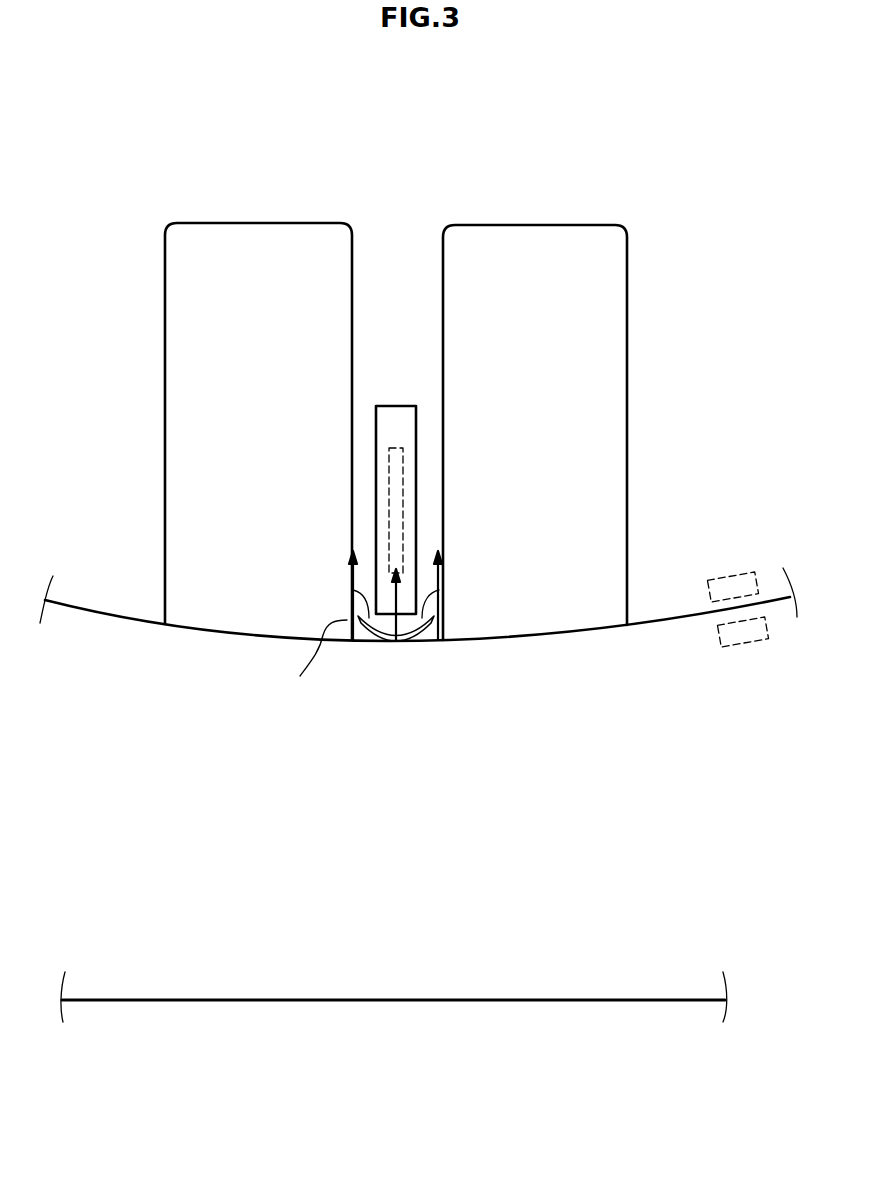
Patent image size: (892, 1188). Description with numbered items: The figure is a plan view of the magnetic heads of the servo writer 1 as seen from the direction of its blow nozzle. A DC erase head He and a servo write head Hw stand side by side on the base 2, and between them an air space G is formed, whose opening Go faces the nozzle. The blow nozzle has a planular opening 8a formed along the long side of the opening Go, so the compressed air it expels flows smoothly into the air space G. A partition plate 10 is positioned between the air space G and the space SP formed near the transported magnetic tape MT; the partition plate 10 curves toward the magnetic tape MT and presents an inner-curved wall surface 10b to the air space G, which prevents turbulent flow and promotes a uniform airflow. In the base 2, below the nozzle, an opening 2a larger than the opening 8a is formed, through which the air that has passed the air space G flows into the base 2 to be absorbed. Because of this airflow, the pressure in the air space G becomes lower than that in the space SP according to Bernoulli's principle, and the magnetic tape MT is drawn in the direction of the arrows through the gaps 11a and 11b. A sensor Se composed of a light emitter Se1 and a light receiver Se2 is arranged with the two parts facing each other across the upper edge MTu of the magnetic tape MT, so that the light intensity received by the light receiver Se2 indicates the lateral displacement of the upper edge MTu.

The servo writer 1 is at (528, 178).
The DC erase head He is at (259, 223).
The servo write head Hw is at (543, 224).
The air space G is at (394, 247).
The opening of the air space Go is at (427, 315).
The opening 2a is at (403, 441).
The planular opening 8a is at (397, 510).
The partition plate 10 is at (430, 600).
The wall surface 10b is at (348, 582).
The gap 11a is at (290, 656).
The gap 11b is at (440, 620).
The space SP is at (432, 645).
The magnetic tape MT is at (129, 621).
The upper edge MTu is at (213, 632).
The sensor Se is at (665, 676).
The light emitter Se1 is at (739, 679).
The light receiver Se2 is at (712, 590).
The base 2 is at (382, 973).